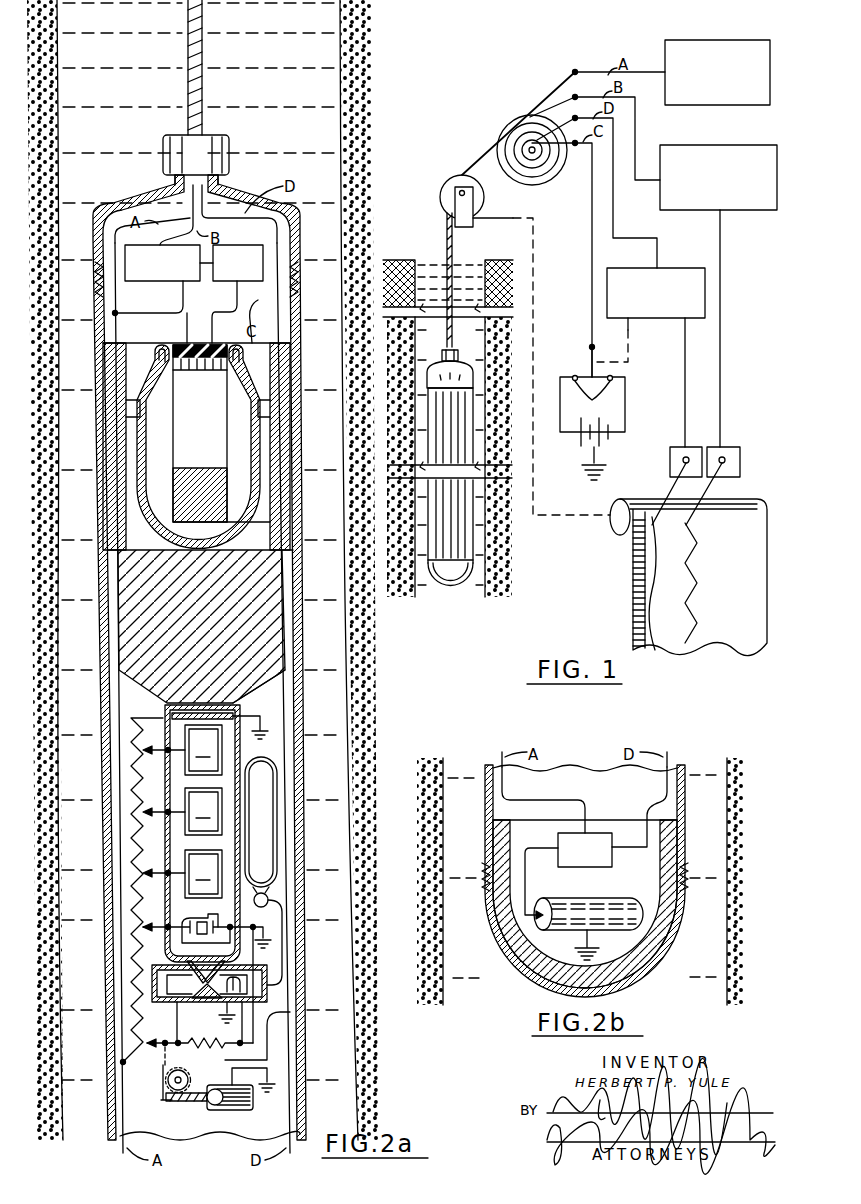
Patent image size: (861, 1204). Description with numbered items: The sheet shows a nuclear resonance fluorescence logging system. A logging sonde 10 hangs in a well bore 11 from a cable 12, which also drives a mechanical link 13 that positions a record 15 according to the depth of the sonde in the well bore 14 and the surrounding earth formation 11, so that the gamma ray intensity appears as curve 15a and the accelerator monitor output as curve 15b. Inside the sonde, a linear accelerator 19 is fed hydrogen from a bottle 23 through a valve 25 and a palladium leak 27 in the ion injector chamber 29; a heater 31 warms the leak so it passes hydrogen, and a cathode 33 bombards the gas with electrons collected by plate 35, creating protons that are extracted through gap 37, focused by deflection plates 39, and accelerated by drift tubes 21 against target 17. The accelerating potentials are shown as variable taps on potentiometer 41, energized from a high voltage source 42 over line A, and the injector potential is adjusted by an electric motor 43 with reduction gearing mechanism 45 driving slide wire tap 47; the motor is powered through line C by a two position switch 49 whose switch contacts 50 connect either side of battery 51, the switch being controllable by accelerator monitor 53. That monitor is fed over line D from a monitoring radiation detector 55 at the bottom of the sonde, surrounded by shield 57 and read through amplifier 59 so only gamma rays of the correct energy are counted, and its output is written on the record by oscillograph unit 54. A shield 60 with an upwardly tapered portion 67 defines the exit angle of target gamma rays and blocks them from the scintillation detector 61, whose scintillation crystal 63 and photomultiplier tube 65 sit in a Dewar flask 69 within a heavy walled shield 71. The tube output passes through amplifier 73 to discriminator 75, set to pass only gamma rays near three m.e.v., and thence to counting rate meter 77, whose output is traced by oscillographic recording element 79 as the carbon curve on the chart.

In FIG. 2A, the logging sonde 10 is at (102, 580).
In FIG. 1, the logging sonde 10 is at (476, 527).
In FIG. 2B, the logging sonde 10 is at (487, 813).
In FIG. 2A, the well bore 11 is at (381, 679).
In FIG. 1, the well bore 11 is at (515, 416).
In FIG. 2A, the cable 12 is at (204, 98).
In FIG. 1, the cable 12 is at (447, 245).
In FIG. 1, the mechanical link 13 is at (450, 178).
In FIG. 2A, the well bore 14 is at (331, 585).
In FIG. 1, the well bore 14 is at (480, 557).
In FIG. 1, the record 15 is at (633, 630).
In FIG. 1, the curve 15a is at (700, 557).
In FIG. 1, the curve 15b is at (657, 572).
In FIG. 2A, the target 17 is at (207, 718).
In FIG. 2A, the linear accelerator 19 is at (240, 753).
In FIG. 2A, the drift tubes 21 is at (182, 811).
In FIG. 2A, the bottle 23 is at (277, 807).
In FIG. 2A, the valve 25 is at (270, 897).
In FIG. 2A, the palladium leak 27 is at (267, 990).
In FIG. 2A, the ion injector chamber 29 is at (152, 982).
In FIG. 2A, the heater 31 is at (267, 975).
In FIG. 2A, the cathode 33 is at (240, 1007).
In FIG. 2A, the plate 35 is at (173, 998).
In FIG. 2A, the gap 37 is at (202, 998).
In FIG. 2A, the deflection plates 39 is at (187, 920).
In FIG. 2A, the potentiometer 41 is at (132, 780).
In FIG. 1, the source 42 is at (713, 40).
In FIG. 2A, the electric motor 43 is at (237, 1108).
In FIG. 2A, the reduction gearing mechanism 45 is at (180, 1103).
In FIG. 2A, the slide wire tap 47 is at (155, 1073).
In FIG. 1, the two position switch 49 is at (586, 374).
In FIG. 1, the switch contacts 50 is at (592, 404).
In FIG. 1, the battery 51 is at (607, 445).
In FIG. 1, the accelerator monitor 53 is at (668, 268).
In FIG. 1, the oscillograph unit 54 is at (672, 448).
In FIG. 2B, the monitoring radiation detector 55 is at (578, 897).
In FIG. 2B, the shield 57 is at (510, 937).
In FIG. 2B, the amplifier 59 is at (610, 868).
In FIG. 2A, the shield 60 is at (212, 631).
In FIG. 2A, the scintillation detector 61 is at (300, 380).
In FIG. 2A, the scintillation crystal 63 is at (173, 497).
In FIG. 2A, the photomultiplier tube 65 is at (173, 452).
In FIG. 2A, the tapered portion 67 is at (267, 684).
In FIG. 2A, the Dewar flask 69 is at (243, 362).
In FIG. 2A, the shield 71 is at (102, 372).
In FIG. 2A, the amplifier 73 is at (214, 283).
In FIG. 2A, the discriminator 75 is at (177, 283).
In FIG. 1, the counting rate meter 77 is at (715, 145).
In FIG. 1, the oscillographic recording element 79 is at (740, 448).